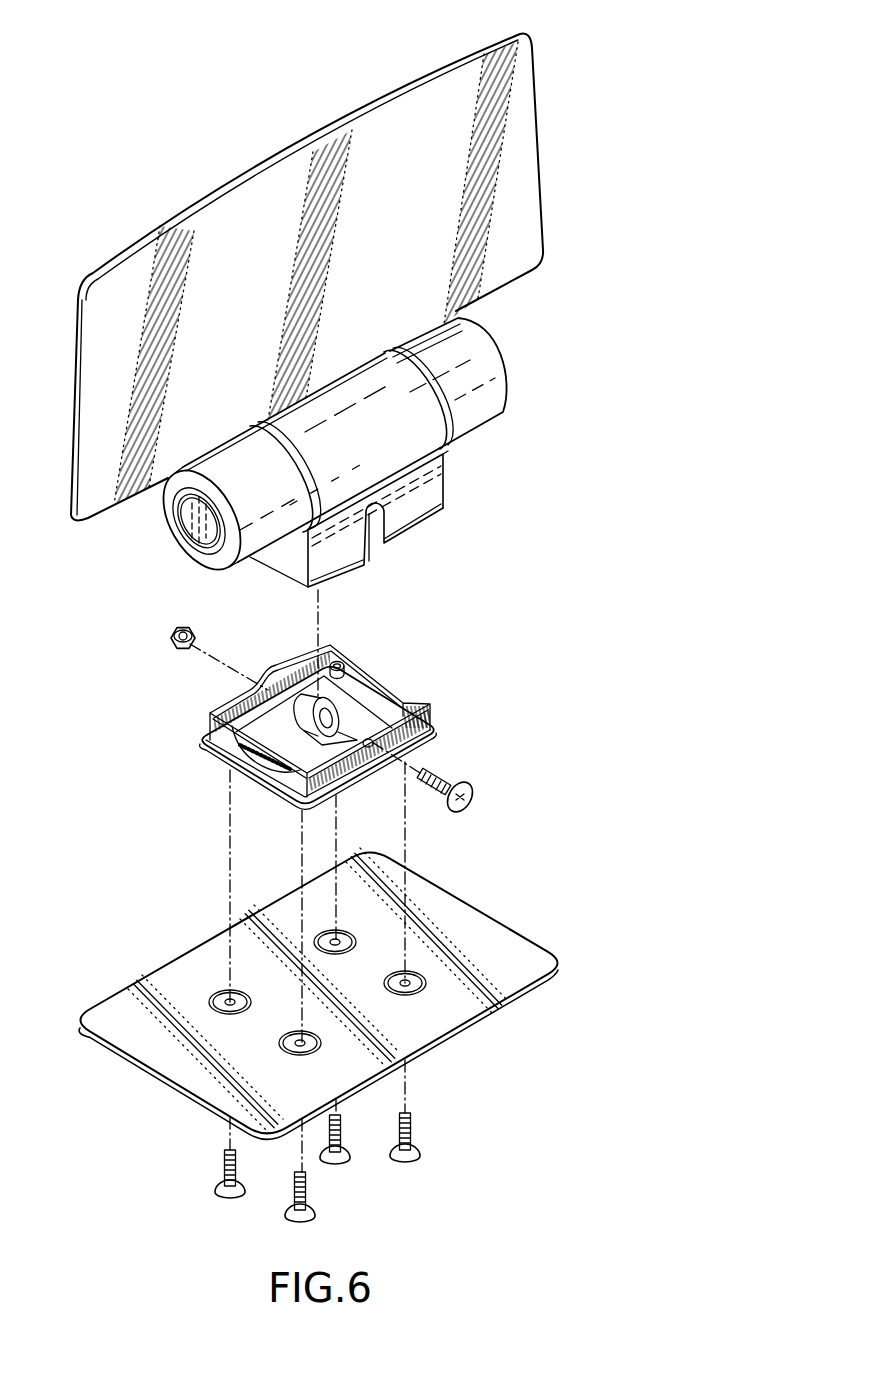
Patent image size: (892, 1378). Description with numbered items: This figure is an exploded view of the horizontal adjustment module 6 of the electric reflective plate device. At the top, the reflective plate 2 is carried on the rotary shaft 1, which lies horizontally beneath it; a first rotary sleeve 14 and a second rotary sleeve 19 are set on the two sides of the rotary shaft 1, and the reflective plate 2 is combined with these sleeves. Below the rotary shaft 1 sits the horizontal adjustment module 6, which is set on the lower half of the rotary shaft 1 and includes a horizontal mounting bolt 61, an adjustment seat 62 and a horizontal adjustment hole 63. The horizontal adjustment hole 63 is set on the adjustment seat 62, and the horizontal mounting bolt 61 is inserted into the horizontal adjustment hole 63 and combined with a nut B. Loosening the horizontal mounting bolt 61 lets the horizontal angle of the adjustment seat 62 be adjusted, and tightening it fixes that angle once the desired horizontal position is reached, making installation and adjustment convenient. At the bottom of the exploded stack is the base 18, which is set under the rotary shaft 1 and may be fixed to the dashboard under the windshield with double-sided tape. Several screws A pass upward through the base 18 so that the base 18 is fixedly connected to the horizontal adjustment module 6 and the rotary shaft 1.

The rotary shaft 1 is at (447, 470).
The reflective plate 2 is at (202, 242).
The first rotary sleeve 14 is at (170, 523).
The second rotary sleeve 19 is at (490, 362).
The horizontal adjustment module 6 is at (437, 670).
The horizontal mounting bolt 61 is at (440, 773).
The adjustment seat 62 is at (435, 706).
The horizontal adjustment hole 63 is at (370, 703).
The base 18 is at (480, 928).
The screw A is at (411, 1123).
The nut B is at (170, 640).